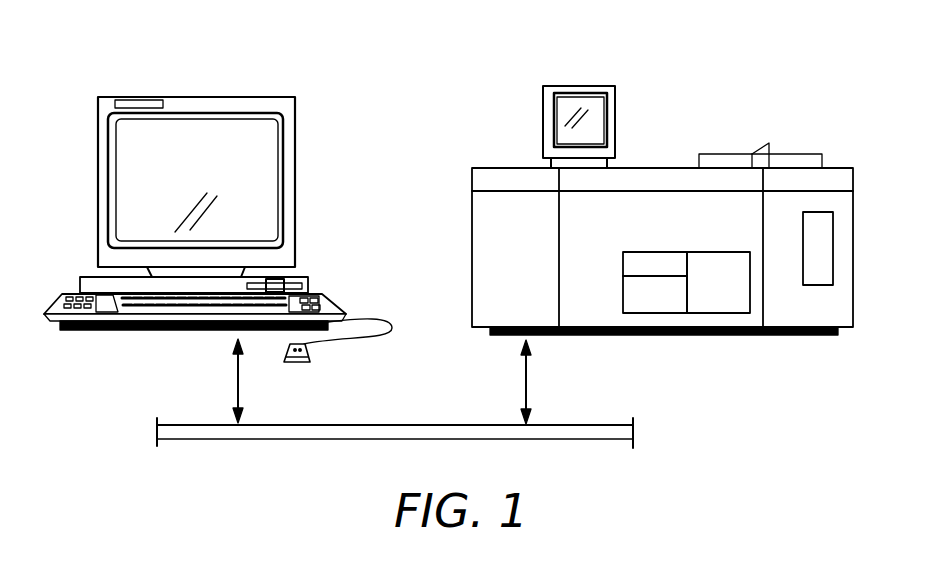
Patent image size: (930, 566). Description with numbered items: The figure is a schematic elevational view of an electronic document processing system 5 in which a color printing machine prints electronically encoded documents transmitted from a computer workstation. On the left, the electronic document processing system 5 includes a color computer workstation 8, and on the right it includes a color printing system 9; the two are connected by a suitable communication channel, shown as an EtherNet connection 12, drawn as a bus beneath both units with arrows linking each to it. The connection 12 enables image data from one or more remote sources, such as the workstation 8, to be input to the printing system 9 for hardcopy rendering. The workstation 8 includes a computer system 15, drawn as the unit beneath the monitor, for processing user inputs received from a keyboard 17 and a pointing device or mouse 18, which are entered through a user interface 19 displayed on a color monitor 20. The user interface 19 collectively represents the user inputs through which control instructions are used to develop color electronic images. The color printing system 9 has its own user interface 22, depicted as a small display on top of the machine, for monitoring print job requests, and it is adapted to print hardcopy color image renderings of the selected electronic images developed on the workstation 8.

The electronic document processing system 5 is at (326, 38).
The color computer workstation 8 is at (318, 210).
The color printing system 9 is at (747, 118).
The EtherNet connection 12 is at (432, 425).
The computer system 15 is at (312, 285).
The keyboard 17 is at (54, 297).
The mouse 18 is at (298, 362).
The user interface 19 is at (258, 162).
The color monitor 20 is at (200, 96).
The user interface 22 is at (597, 118).